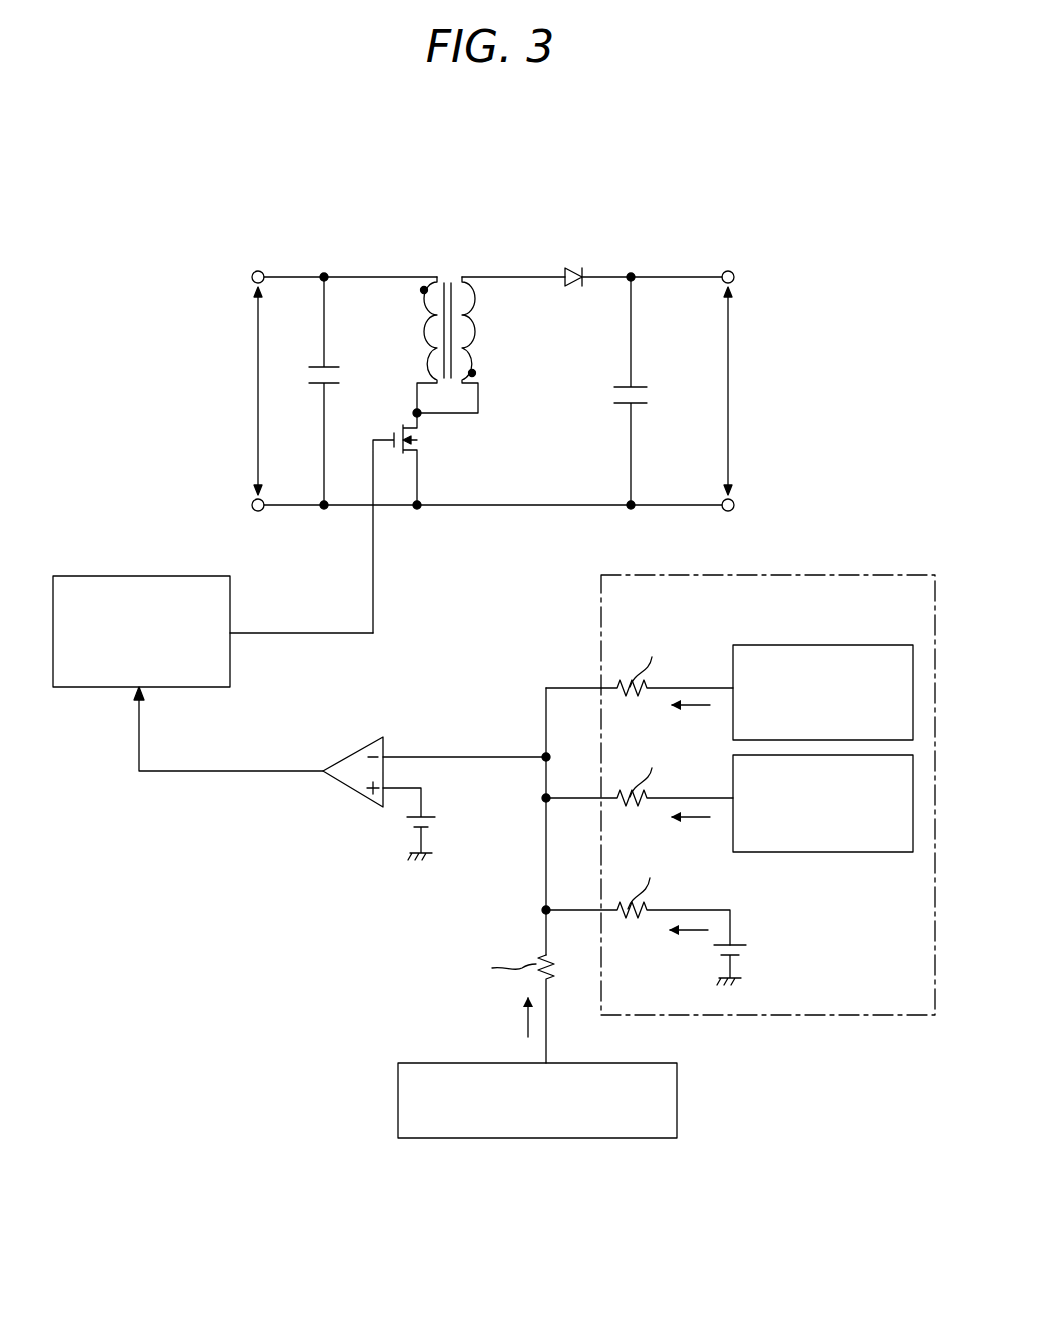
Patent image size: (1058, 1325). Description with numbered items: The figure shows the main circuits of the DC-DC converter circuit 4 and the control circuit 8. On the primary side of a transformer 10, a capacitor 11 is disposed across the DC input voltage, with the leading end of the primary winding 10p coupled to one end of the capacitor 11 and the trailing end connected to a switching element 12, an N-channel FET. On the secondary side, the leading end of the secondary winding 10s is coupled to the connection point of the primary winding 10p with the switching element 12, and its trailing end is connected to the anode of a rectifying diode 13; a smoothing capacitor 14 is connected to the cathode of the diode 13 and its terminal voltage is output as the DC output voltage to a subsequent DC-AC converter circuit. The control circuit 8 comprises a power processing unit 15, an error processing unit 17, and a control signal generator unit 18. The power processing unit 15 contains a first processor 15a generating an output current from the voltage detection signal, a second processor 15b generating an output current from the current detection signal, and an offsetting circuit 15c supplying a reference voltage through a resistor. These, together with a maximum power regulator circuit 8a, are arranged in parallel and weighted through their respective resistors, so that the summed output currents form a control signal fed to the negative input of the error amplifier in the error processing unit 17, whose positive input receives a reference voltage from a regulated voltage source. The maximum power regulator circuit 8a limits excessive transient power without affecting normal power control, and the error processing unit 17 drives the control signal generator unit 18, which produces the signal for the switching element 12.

The DC-DC converter circuit 4 is at (684, 248).
The control circuit 8 is at (400, 962).
The maximum power regulator circuit 8a is at (677, 1098).
The transformer 10 is at (523, 204).
The primary winding 10p is at (437, 278).
The secondary winding 10s is at (462, 278).
The capacitor 11 is at (326, 366).
The switching element 12 is at (406, 450).
The rectifying diode 13 is at (577, 270).
The smoothing capacitor 14 is at (640, 388).
The power processing unit 15 is at (801, 576).
The first processor 15a is at (821, 646).
The second processor 15b is at (821, 852).
The offsetting circuit 15c is at (770, 942).
The error processing unit 17 is at (335, 799).
The control signal generator unit 18 is at (137, 576).